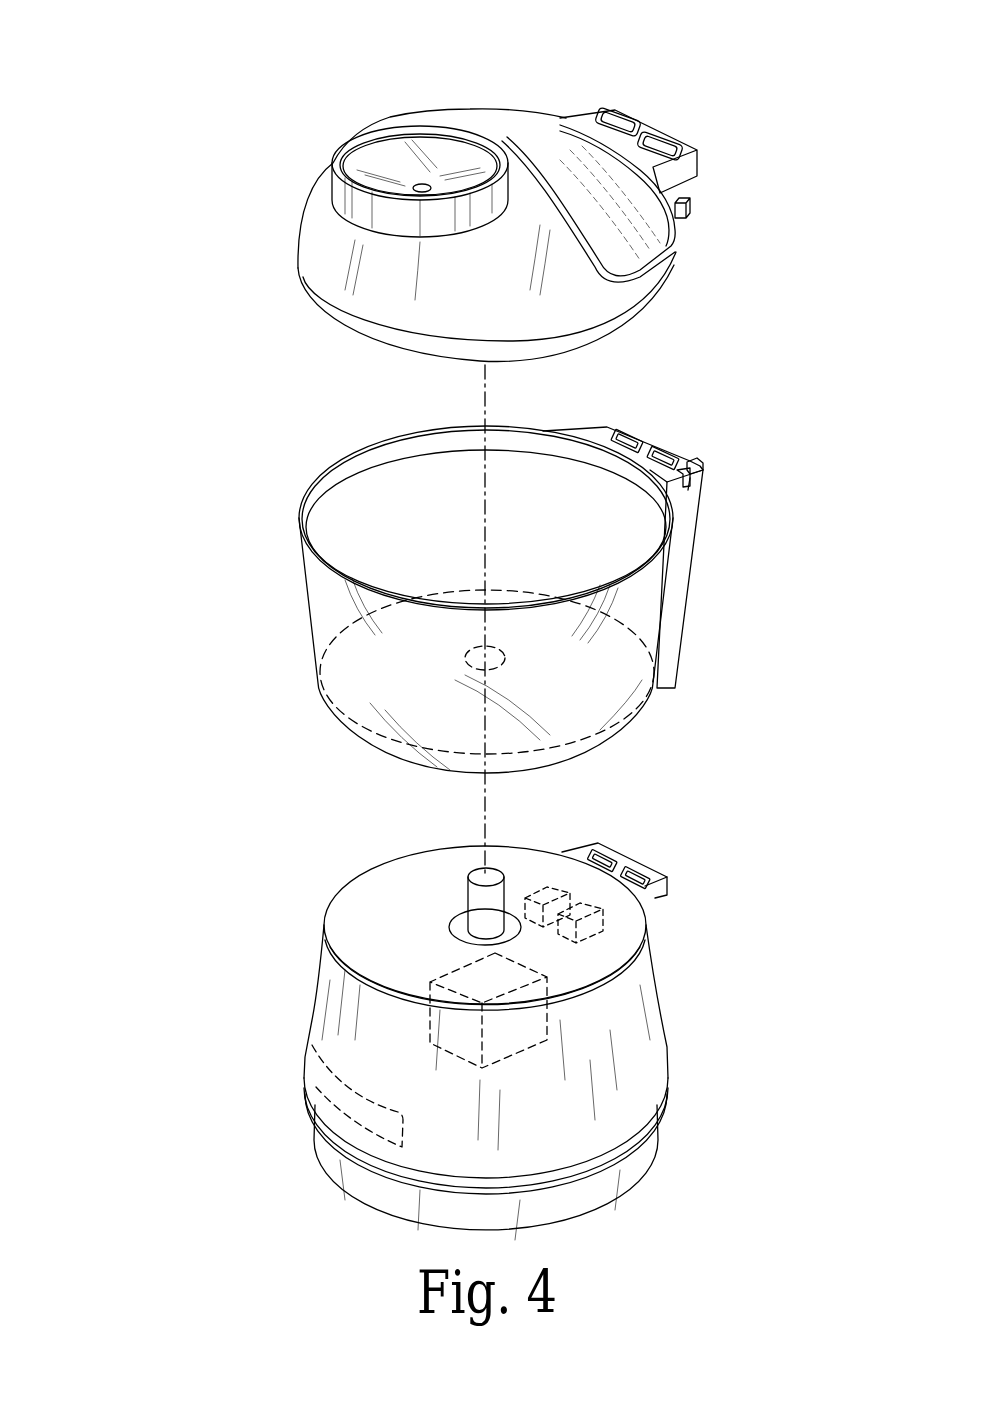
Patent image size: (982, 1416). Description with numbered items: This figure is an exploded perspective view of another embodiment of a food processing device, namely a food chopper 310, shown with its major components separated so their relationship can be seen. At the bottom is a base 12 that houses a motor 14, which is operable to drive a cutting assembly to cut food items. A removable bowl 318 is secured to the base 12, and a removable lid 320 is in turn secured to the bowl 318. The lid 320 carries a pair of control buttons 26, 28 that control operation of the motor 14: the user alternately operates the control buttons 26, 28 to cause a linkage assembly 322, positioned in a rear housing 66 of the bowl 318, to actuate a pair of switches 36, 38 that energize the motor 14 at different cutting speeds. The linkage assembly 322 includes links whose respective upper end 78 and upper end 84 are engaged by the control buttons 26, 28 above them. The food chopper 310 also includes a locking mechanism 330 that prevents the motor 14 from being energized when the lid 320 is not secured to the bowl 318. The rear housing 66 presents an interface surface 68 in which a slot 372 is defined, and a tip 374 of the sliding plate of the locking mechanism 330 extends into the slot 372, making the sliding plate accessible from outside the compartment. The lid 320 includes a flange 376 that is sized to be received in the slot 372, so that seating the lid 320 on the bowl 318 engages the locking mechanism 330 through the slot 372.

The food chopper 310 is at (182, 110).
The lid 320 is at (268, 222).
The control button 26 is at (495, 120).
The control button 28 is at (643, 247).
The flange 376 is at (688, 212).
The bowl 318 is at (270, 613).
The linkage assembly 322 is at (710, 425).
The interface surface 68 is at (600, 437).
The upper end 78 is at (623, 440).
The upper end 84 is at (663, 453).
The locking mechanism 330 is at (718, 483).
The rear housing 66 is at (682, 578).
The tip 374 is at (685, 470).
The slot 372 is at (697, 495).
The base 12 is at (272, 983).
The motor 14 is at (463, 1048).
The switch 36 is at (543, 888).
The switch 38 is at (587, 927).